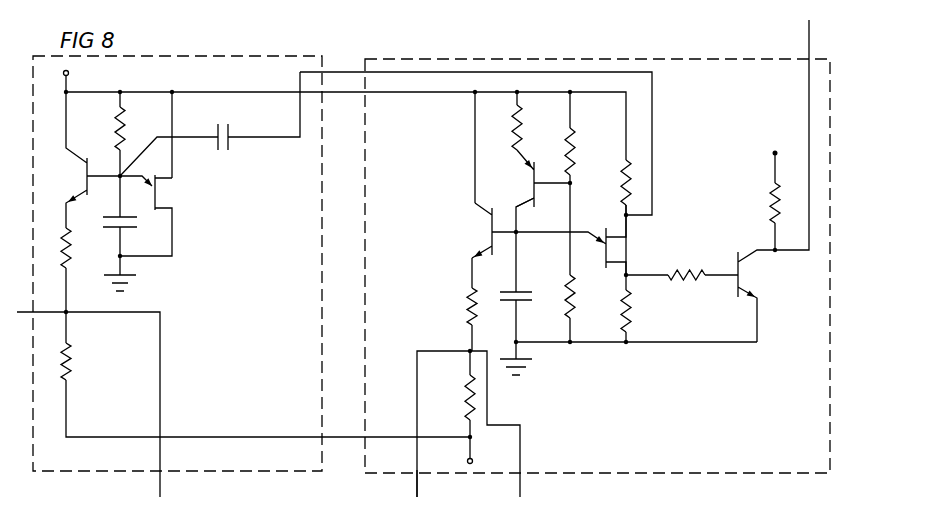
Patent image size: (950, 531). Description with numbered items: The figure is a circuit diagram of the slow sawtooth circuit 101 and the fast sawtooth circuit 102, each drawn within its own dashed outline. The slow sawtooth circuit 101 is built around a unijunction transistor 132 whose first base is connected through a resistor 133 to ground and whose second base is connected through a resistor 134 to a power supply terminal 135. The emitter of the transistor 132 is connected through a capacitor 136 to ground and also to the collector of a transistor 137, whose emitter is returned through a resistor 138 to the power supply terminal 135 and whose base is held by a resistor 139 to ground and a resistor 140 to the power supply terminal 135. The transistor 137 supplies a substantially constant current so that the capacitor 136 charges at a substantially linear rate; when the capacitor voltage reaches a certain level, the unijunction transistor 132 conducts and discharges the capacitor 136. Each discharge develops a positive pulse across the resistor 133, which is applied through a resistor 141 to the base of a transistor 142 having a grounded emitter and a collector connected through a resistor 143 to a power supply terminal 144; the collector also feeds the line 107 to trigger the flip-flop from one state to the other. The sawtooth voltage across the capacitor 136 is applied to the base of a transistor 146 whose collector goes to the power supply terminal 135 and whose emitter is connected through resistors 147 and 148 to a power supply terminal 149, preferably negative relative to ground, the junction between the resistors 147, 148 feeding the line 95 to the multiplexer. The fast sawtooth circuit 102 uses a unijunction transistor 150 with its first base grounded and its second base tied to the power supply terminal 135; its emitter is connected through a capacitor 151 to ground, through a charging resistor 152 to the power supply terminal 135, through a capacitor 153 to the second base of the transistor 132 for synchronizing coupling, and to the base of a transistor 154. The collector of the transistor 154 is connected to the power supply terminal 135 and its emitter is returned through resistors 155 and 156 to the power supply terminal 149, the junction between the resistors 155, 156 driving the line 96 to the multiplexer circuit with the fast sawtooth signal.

The line 95 is at (417, 487).
The line 96 is at (45, 301).
The slow sawtooth circuit 101 is at (537, 61).
The fast sawtooth circuit 102 is at (183, 59).
The line 107 is at (812, 33).
The unijunction transistor 132 is at (602, 232).
The resistor 133 is at (633, 305).
The resistor 134 is at (633, 186).
The power supply terminal 135 is at (69, 74).
The capacitor 136 is at (527, 278).
The transistor 137 is at (548, 152).
The resistor 138 is at (528, 116).
The resistor 139 is at (576, 305).
The resistor 140 is at (576, 153).
The resistor 141 is at (682, 262).
The transistor 142 is at (738, 283).
The resistor 143 is at (771, 205).
The power supply terminal 144 is at (775, 153).
The transistor 146 is at (490, 232).
The resistor 147 is at (467, 309).
The resistor 148 is at (466, 391).
The power supply terminal 149 is at (473, 460).
The unijunction transistor 150 is at (160, 196).
The capacitor 151 is at (126, 229).
The charging resistor 152 is at (123, 141).
The capacitor 153 is at (230, 135).
The transistor 154 is at (97, 168).
The resistor 155 is at (72, 252).
The resistor 156 is at (72, 365).